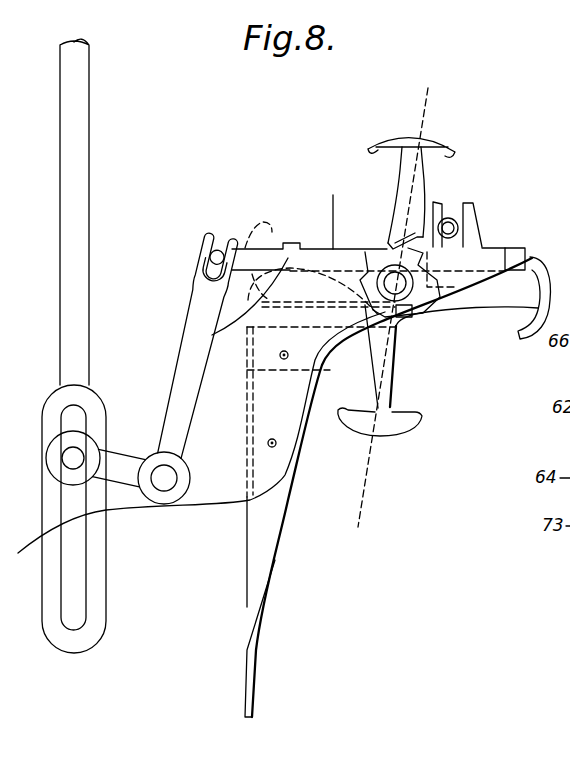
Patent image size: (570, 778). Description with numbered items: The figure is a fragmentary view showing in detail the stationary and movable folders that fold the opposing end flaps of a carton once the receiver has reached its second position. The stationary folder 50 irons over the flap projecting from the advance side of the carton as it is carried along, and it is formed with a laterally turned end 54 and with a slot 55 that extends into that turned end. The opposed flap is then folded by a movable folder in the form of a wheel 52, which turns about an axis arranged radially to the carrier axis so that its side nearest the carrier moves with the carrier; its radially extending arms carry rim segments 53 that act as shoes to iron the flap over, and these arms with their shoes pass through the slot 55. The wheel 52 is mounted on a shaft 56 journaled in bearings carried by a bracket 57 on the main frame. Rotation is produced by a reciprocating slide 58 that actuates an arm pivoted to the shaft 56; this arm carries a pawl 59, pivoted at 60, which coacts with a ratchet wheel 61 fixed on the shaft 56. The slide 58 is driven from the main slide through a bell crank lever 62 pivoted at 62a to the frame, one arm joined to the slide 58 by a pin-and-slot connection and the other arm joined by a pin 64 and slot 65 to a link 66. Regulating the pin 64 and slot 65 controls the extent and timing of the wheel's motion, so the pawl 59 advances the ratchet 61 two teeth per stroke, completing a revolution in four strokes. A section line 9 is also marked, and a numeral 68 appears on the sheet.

The section line 9- 9 is at (393, 307).
The stationary folder 50 is at (250, 530).
The wheel 52 is at (383, 348).
The segments 53 is at (447, 143).
The laterally turned end 54 is at (297, 305).
The slot 55 is at (422, 420).
The shaft 56 is at (390, 270).
The bracket 57 is at (465, 277).
The reciprocating slide 58 is at (515, 253).
The pawl 59 is at (413, 235).
The pivot 60 is at (418, 238).
The ratchet wheel 61 is at (412, 307).
The bell crank lever 62 is at (185, 422).
The pivot 62a is at (175, 478).
The pin 64 is at (72, 458).
The slot 65 is at (63, 494).
The link 66 is at (80, 307).
The connecting bar 68 is at (125, 458).